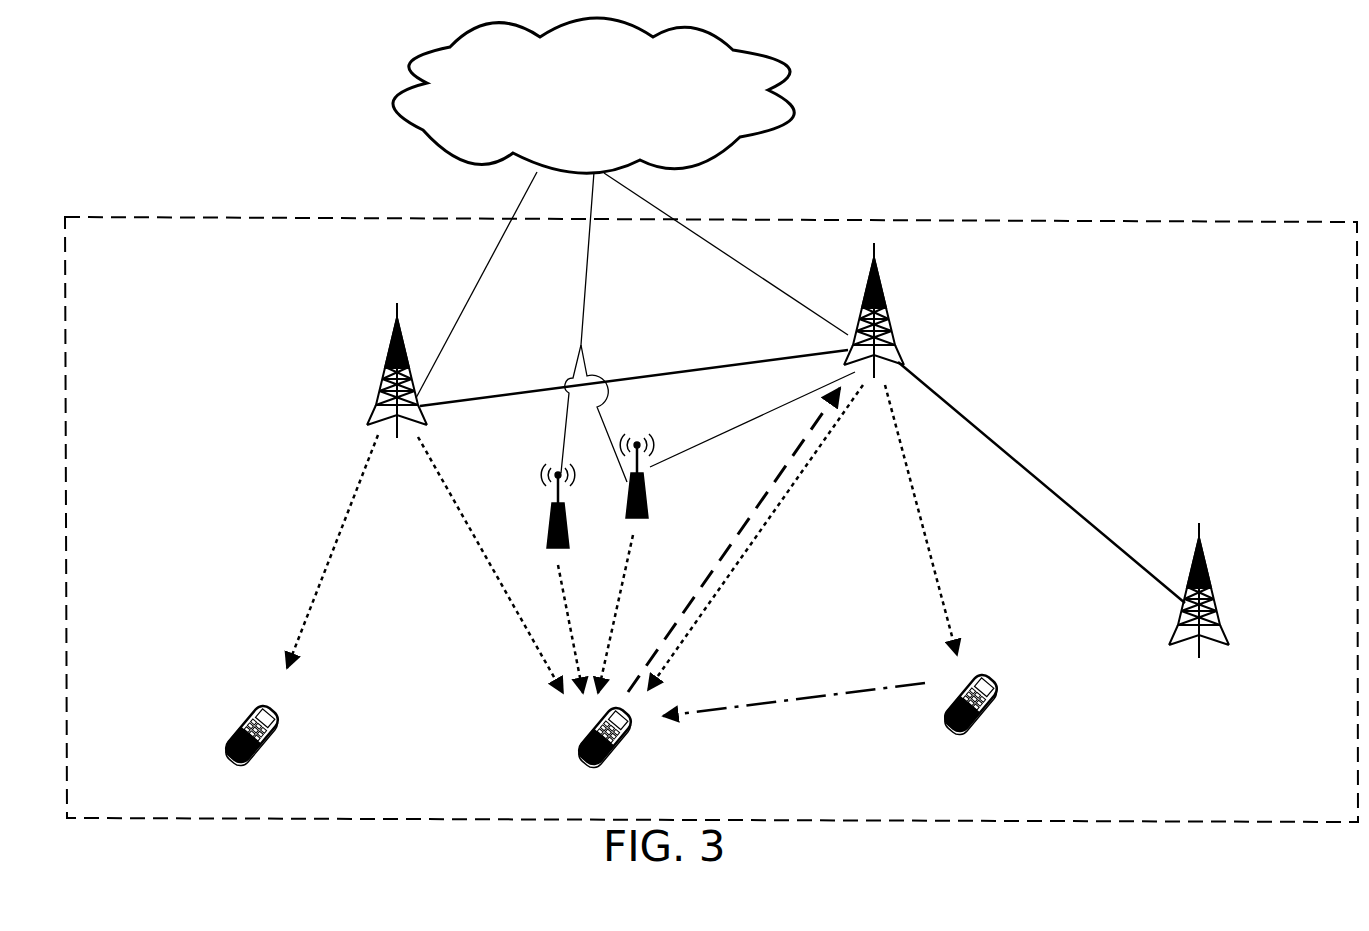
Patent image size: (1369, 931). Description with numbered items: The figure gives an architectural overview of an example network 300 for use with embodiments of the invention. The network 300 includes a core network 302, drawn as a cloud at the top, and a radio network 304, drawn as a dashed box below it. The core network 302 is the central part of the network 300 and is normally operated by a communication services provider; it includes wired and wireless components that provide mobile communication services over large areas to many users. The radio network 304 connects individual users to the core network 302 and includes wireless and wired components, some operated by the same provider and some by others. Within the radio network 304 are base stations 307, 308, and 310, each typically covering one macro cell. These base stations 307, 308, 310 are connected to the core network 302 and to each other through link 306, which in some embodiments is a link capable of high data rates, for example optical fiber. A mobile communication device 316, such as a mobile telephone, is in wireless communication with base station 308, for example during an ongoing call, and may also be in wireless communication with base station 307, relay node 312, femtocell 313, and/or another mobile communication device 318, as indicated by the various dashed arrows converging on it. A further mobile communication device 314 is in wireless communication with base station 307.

The network 300 is at (260, 120).
The core network 302 is at (790, 103).
The radio network 304 is at (240, 217).
The link 306 is at (1053, 420).
The base station 307 is at (385, 362).
The base station 308 is at (890, 308).
The base station 310 is at (1208, 580).
The relay node 312 is at (648, 467).
The femtocell 313 is at (548, 532).
The mobile communication device 314 is at (223, 753).
The mobile communication device 316 is at (578, 755).
The mobile communication device 318 is at (992, 678).